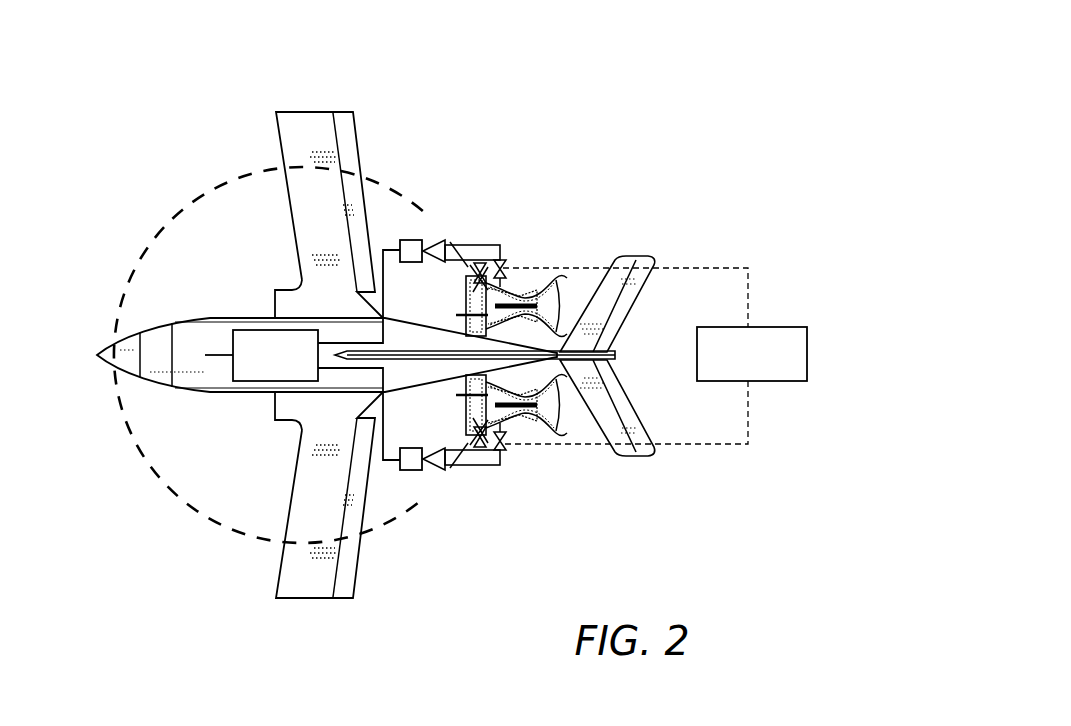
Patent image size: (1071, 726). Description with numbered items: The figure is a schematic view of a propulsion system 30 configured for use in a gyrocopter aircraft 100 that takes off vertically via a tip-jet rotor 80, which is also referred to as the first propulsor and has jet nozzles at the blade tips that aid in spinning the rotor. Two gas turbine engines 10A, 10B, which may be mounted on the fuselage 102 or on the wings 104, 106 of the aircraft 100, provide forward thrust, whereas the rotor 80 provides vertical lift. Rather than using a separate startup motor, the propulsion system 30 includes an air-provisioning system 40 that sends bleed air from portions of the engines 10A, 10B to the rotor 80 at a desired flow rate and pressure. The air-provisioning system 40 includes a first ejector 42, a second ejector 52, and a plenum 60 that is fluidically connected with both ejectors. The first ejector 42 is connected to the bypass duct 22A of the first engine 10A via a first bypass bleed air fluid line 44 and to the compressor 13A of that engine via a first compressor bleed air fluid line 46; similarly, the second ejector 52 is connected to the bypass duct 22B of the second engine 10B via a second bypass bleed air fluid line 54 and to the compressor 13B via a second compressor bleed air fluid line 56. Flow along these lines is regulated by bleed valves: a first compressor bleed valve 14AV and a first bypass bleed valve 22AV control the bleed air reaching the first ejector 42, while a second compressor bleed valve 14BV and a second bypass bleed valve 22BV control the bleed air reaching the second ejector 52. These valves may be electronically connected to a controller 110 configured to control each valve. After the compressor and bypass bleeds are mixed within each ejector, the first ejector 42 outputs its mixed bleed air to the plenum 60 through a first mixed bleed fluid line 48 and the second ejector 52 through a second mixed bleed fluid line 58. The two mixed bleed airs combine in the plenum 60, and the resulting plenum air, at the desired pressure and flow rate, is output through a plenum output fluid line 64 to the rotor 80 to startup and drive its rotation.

The propulsion system 30 is at (740, 128).
The air-provisioning system 40 is at (594, 166).
The gyrocopter aircraft 100 is at (167, 233).
The fuselage 102 is at (202, 346).
The tip-jet rotor 80 is at (104, 345).
The plenum output fluid line 64 is at (228, 350).
The plenum 60 is at (252, 326).
The wing 104 is at (339, 219).
The wing 106 is at (323, 514).
The first mixed bleed fluid line 48 is at (387, 247).
The second compressor bleed air fluid line 56 is at (453, 447).
The first compressor bleed air fluid line 46 is at (451, 265).
The second mixed bleed fluid line 58 is at (390, 473).
The first ejector 42 is at (436, 235).
The second ejector 52 is at (431, 472).
The first bypass bleed air fluid line 44 is at (503, 240).
The second bypass bleed air fluid line 54 is at (493, 470).
The first compressor bleed valve 14AV is at (483, 246).
The first bypass bleed valve 22AV is at (483, 246).
The second compressor bleed valve 14BV is at (484, 470).
The second bypass bleed valve 22BV is at (484, 470).
The first gas turbine engine 10A is at (555, 270).
The second gas turbine engine 10B is at (558, 440).
The bypass duct of the first gas turbine engine 22A is at (522, 284).
The bypass duct of the second gas turbine engine 22B is at (522, 430).
The compressor of the first gas turbine engine 13A is at (470, 315).
The compressor of the second gas turbine engine 13B is at (470, 395).
The controller 110 is at (819, 350).